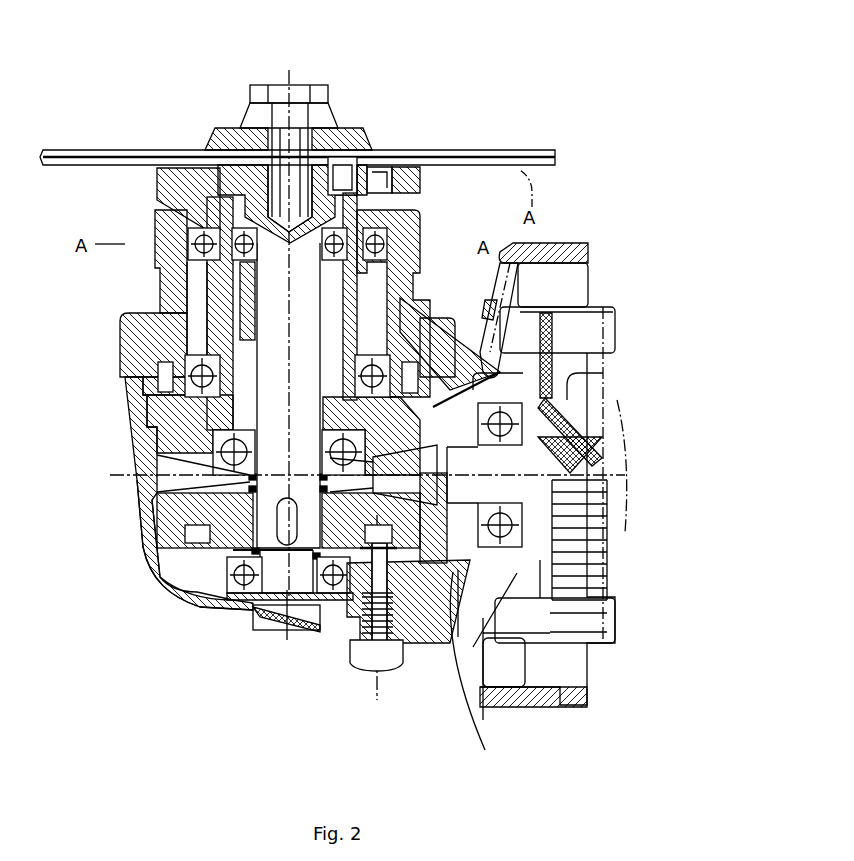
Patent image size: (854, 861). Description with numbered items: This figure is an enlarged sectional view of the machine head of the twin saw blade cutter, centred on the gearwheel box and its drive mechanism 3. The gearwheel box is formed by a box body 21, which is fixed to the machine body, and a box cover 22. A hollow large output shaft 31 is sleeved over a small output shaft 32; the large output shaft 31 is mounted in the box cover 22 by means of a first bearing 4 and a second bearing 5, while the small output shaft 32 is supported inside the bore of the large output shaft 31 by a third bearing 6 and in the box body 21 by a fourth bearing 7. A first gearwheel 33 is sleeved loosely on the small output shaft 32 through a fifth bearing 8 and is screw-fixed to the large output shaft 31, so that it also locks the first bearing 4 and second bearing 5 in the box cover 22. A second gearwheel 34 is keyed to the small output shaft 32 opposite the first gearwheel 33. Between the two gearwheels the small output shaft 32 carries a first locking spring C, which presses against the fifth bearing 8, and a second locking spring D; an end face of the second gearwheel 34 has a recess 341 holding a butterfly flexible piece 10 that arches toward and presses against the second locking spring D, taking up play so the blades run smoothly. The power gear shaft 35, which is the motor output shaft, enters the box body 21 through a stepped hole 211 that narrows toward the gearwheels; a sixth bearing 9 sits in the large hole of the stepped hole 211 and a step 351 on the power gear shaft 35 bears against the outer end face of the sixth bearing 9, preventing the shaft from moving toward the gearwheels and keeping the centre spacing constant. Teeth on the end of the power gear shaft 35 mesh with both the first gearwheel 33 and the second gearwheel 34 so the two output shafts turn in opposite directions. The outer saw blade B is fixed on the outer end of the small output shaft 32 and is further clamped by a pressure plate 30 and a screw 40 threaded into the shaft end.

The screw 40 is at (302, 105).
The pressure plate 30 is at (222, 135).
The small output shaft 32 is at (335, 168).
The large output shaft 31 is at (160, 183).
The first bearing 4 is at (185, 257).
The third bearing 6 is at (417, 232).
The drive mechanism 3 is at (238, 293).
The box cover 22 is at (130, 336).
The second bearing 5 is at (153, 375).
The first gearwheel 33 is at (157, 426).
The fifth bearing 8 is at (157, 455).
The flexible piece 10 is at (175, 580).
The fourth bearing 7 is at (220, 591).
The recess 341 is at (287, 612).
The second gearwheel 34 is at (330, 622).
The box body 21 is at (423, 643).
The stepped hole 211 is at (455, 650).
The sixth bearing 9 is at (527, 390).
The power gear shaft 35 is at (590, 433).
The step 351 is at (560, 513).
The outer saw blade B is at (450, 152).
The first locking spring C is at (160, 495).
The second locking spring D is at (165, 535).